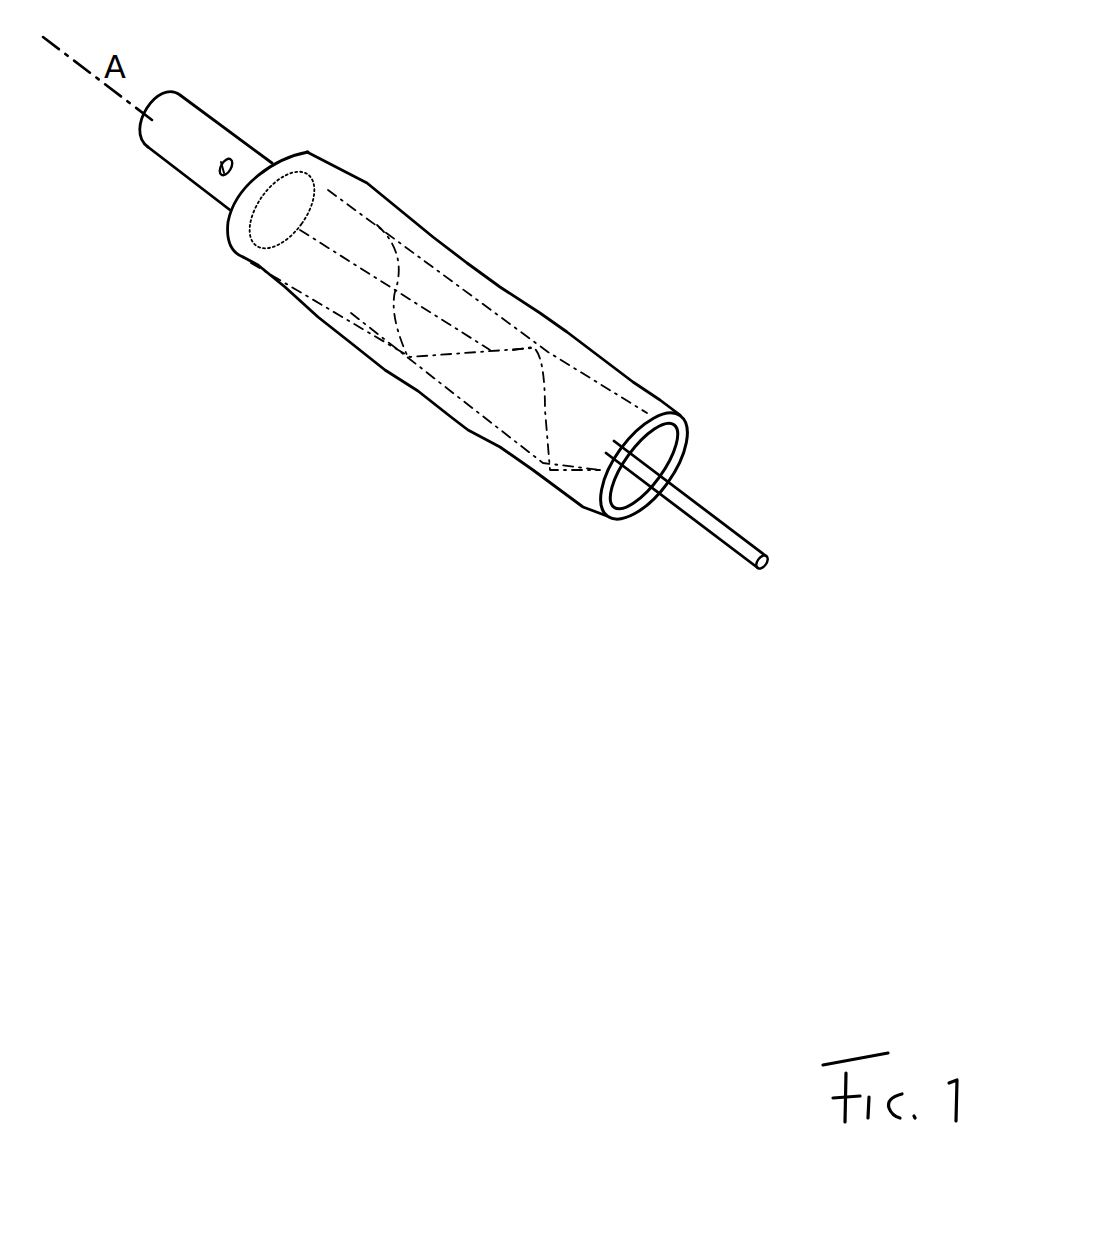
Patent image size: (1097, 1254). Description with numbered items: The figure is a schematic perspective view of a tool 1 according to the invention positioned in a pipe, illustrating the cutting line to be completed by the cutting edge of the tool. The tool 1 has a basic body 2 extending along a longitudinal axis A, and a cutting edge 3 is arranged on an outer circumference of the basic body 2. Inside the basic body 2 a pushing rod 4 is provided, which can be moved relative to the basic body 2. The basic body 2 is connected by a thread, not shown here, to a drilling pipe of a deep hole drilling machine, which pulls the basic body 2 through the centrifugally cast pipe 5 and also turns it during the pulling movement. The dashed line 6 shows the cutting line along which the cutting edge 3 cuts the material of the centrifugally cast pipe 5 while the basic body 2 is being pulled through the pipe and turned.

The tool 1 is at (228, 78).
The basic body 2 is at (222, 133).
The cutting edge 3 is at (220, 183).
The pushing rod 4 is at (740, 547).
The centrifugally cast pipe 5 is at (600, 370).
The dashed line 6 is at (553, 473).